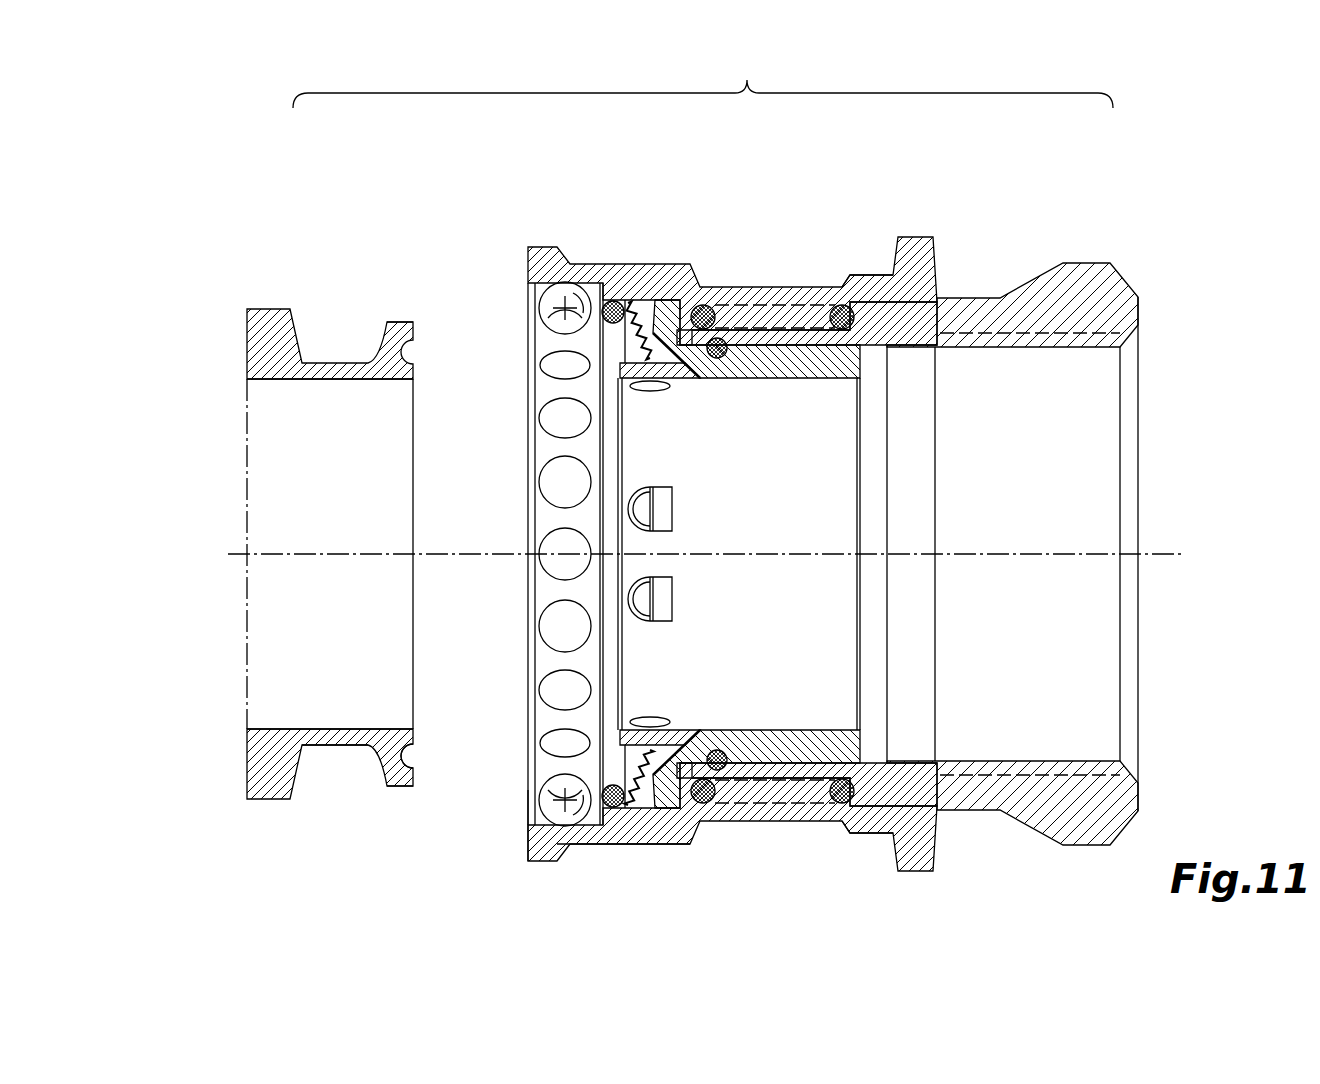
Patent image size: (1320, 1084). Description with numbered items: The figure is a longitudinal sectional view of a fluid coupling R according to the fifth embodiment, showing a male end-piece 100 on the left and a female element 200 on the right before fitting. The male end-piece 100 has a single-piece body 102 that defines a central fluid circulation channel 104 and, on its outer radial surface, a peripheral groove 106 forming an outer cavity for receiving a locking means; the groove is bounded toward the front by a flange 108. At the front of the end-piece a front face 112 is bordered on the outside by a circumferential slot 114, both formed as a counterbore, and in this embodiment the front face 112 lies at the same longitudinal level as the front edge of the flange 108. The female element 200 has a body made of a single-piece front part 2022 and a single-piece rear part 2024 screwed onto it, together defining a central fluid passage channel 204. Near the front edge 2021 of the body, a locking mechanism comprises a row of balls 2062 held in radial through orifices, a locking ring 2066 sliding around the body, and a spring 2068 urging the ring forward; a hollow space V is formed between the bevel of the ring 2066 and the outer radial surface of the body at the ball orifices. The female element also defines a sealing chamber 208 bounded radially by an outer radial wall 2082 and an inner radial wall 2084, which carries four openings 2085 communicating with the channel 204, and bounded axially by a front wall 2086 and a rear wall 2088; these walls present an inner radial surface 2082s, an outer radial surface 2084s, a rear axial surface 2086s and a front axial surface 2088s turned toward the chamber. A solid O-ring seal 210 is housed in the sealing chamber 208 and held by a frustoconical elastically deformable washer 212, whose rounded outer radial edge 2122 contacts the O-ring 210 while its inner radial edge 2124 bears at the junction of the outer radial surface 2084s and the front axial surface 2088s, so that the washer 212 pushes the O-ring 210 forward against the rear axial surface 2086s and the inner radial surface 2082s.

The fluid coupling R is at (703, 80).
The male end-piece 100 is at (300, 491).
The body 102 is at (262, 769).
The central fluid circulation channel 104 is at (330, 554).
The peripheral groove 106 is at (330, 782).
The flange 108 is at (397, 335).
The front face 112 is at (416, 733).
The circumferential slot 114 is at (418, 758).
The female element 200 is at (848, 528).
The central fluid passage channel 204 is at (1222, 392).
The front part 2022 is at (780, 366).
The rear part 2024 is at (1107, 307).
The front edge 2021 is at (527, 805).
The sealing chamber 208 is at (540, 800).
The outer radial wall 2082 is at (636, 840).
The inner radial surface 2082s is at (706, 306).
The inner radial wall 2084 is at (632, 728).
The outer radial surface 2084s is at (590, 795).
The openings 2085 is at (657, 390).
The front wall 2086 is at (565, 313).
The rear axial surface 2086s is at (660, 843).
The rear wall 2088 is at (675, 845).
The front axial surface 2088s is at (652, 762).
The balls 2062 is at (553, 297).
The locking ring 2066 is at (786, 292).
The spring 2068 is at (835, 808).
The O-ring seal 210 is at (596, 290).
The elastically deformable washer 212 is at (670, 358).
The rounded outer radial edge 2122 is at (636, 300).
The inner radial edge 2124 is at (630, 325).
The hollow space V is at (527, 831).